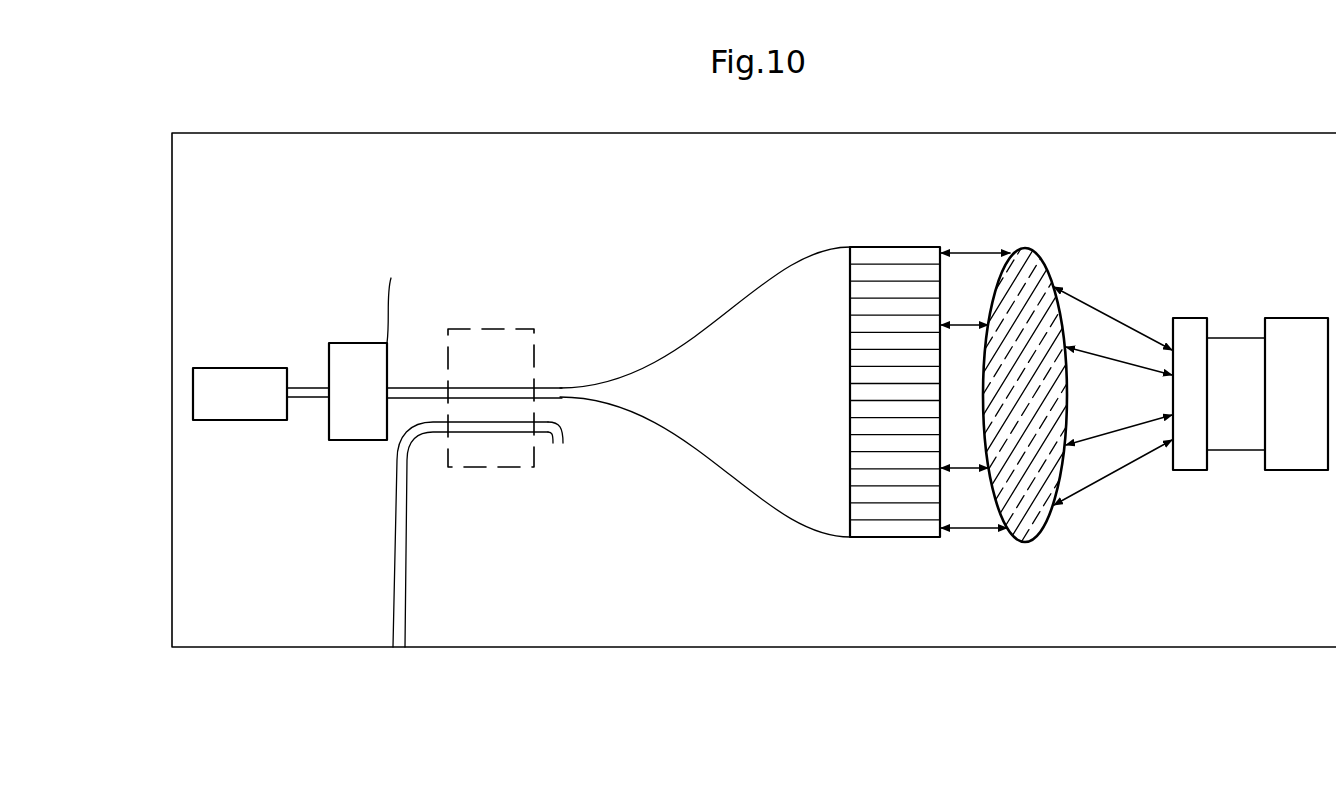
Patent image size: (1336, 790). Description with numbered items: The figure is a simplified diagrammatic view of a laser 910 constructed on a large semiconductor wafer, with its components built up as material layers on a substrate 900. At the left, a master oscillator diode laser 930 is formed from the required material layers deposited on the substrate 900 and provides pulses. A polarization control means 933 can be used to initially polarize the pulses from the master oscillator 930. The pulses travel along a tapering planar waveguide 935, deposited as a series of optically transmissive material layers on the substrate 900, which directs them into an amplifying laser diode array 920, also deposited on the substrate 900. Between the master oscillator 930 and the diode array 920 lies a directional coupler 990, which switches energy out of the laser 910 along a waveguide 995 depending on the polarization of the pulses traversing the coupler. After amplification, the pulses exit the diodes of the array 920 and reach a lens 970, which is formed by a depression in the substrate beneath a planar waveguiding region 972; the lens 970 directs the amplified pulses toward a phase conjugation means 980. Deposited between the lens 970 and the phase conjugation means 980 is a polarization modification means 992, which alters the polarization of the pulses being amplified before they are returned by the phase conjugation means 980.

The substrate 900 is at (663, 196).
The laser 910 is at (1230, 133).
The amplifying laser diode array 920 is at (897, 246).
The master oscillator diode laser 930 is at (270, 367).
The polarization control means 933 is at (360, 342).
The tapering planar waveguide 935 is at (563, 386).
The lens 970 is at (1030, 250).
The planar waveguiding region 972 is at (970, 511).
The phase conjugation means 980 is at (1310, 319).
The directional coupler 990 is at (480, 329).
The polarization modification means 992 is at (1198, 472).
The waveguide 995 is at (405, 590).